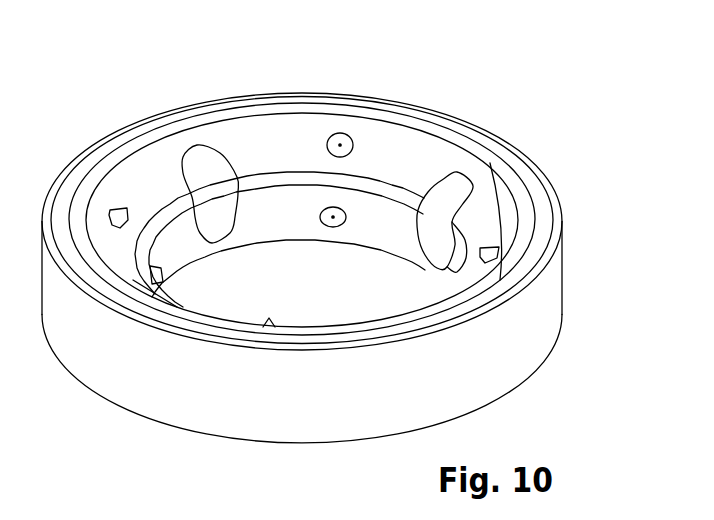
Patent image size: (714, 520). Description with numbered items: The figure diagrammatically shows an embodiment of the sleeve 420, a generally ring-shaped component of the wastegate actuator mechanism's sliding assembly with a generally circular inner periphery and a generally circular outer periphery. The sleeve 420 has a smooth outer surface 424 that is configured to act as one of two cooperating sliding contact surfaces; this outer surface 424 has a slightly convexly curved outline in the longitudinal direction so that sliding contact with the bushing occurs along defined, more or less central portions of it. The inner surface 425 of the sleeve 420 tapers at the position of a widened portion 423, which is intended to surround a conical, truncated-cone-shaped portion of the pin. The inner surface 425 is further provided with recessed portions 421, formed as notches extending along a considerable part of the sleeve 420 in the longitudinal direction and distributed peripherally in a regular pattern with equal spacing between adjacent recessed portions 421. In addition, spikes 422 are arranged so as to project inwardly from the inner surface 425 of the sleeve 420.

The sleeve 420 is at (350, 100).
The recessed portions 421 is at (452, 195).
The spikes 422 is at (487, 253).
The widened portion 423 is at (485, 210).
The outer surface 424 is at (538, 313).
The inner surface 425 is at (412, 160).